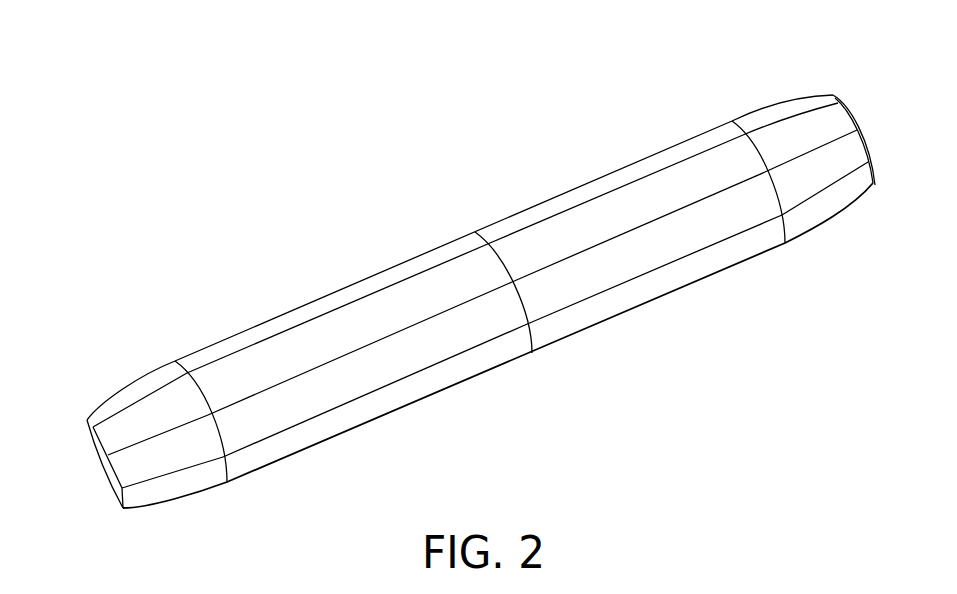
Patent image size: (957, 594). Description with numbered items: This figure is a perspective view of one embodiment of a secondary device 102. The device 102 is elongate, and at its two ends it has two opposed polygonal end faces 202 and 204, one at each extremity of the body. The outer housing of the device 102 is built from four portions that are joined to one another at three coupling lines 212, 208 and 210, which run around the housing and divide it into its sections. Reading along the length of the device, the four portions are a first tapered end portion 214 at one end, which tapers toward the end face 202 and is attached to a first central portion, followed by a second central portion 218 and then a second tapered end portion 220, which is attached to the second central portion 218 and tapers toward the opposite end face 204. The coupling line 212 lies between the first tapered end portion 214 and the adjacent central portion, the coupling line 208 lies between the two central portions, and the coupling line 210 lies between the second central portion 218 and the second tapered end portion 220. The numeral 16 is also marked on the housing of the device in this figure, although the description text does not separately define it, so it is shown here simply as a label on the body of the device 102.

The secondary device 102 is at (302, 248).
The polygonal end face 202 is at (106, 494).
The polygonal end face 204 is at (833, 92).
The coupling line 212 is at (167, 347).
The coupling line 208 is at (533, 358).
The coupling line 210 is at (787, 250).
The first tapered end portion 214 is at (177, 461).
The housing 16 is at (332, 395).
The second central portion 218 is at (617, 270).
The second tapered end portion 220 is at (835, 172).